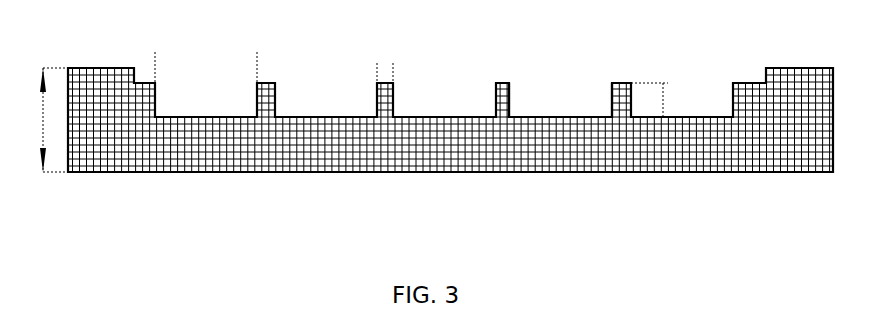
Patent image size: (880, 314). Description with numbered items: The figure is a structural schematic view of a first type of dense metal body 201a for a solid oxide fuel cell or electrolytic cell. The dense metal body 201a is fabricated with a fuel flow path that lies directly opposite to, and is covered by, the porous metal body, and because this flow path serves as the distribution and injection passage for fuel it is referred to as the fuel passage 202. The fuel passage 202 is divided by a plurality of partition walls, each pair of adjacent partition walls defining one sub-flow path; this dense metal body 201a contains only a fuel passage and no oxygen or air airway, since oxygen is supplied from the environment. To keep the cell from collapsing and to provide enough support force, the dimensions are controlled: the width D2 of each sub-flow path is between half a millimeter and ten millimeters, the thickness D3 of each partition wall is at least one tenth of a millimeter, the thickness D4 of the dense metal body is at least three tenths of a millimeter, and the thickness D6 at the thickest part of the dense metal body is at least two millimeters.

The dense metal body 201a is at (482, 48).
The fuel passage 202 is at (544, 91).
The width of the sub-flow path D2 is at (257, 59).
The thickness of the partition wall D3 is at (417, 68).
The thickness of the dense metal body D4 is at (663, 83).
The thickness of the thickest part of the dense metal body D6 is at (43, 172).